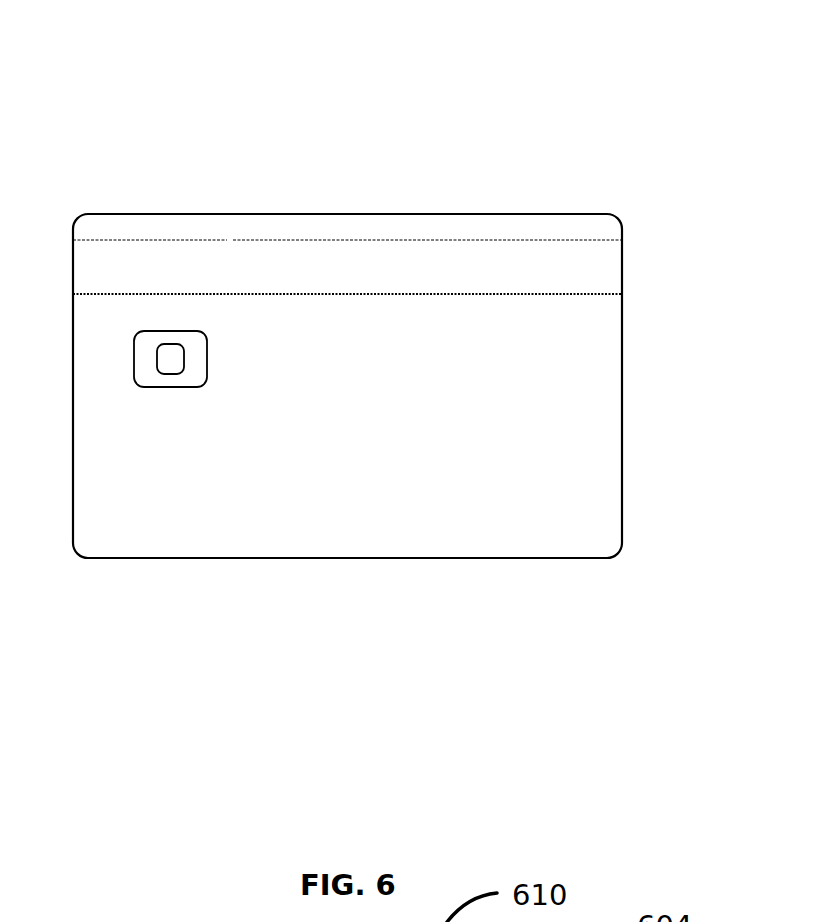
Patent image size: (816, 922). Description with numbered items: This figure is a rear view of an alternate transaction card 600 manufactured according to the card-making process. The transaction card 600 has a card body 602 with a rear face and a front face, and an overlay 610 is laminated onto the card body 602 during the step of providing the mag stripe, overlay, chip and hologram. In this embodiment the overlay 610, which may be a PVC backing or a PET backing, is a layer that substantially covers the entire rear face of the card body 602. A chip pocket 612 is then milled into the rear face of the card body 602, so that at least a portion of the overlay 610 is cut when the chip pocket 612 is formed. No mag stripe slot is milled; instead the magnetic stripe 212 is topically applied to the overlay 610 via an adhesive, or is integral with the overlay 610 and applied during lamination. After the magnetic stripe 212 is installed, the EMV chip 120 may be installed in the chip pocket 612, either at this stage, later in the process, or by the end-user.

The transaction card 600 is at (255, 62).
The card body 602 is at (622, 405).
The magnetic stripe 212 is at (438, 260).
The overlay 610 is at (542, 482).
The chip pocket 612 is at (207, 385).
The EMV chip 120 is at (168, 365).